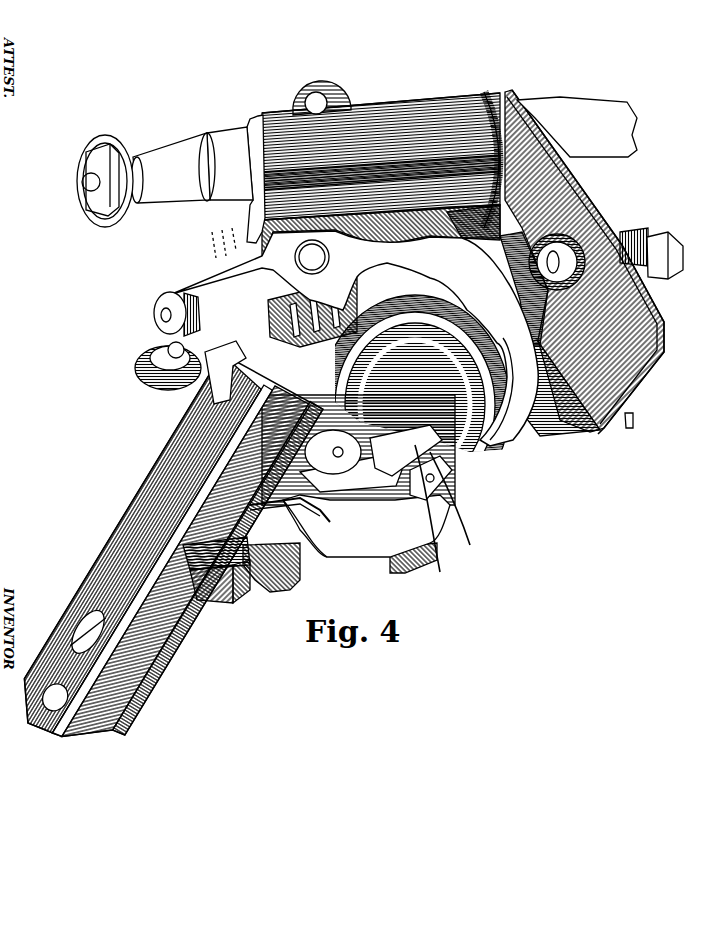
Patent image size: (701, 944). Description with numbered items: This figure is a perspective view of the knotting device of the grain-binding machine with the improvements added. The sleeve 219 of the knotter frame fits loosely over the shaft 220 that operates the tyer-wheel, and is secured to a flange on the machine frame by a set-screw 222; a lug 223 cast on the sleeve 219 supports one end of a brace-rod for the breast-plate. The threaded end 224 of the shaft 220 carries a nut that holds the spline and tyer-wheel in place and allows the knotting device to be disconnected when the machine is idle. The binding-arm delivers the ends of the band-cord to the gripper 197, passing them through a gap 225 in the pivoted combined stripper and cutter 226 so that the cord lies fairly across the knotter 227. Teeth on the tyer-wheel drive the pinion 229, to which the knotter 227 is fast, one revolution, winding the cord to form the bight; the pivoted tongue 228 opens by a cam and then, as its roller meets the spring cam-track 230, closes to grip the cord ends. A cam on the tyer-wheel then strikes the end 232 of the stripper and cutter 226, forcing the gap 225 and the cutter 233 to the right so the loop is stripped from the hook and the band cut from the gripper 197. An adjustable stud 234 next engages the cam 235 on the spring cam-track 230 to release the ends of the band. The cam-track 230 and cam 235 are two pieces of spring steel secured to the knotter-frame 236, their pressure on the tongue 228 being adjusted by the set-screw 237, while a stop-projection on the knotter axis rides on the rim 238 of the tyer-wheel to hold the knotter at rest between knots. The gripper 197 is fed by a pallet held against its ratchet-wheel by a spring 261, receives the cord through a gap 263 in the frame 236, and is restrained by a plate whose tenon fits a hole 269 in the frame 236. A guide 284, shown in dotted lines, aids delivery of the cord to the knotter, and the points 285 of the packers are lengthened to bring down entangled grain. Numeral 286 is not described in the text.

The gripper 197 is at (346, 543).
The sleeve 219 is at (381, 154).
The shaft 220 is at (577, 127).
The set-screw 222 is at (651, 242).
The lug 223 is at (322, 89).
The threaded end of shaft 224 is at (158, 179).
The gap 225 is at (323, 445).
The pivoted combined stripper and cutter 226 is at (355, 338).
The knotter 227 is at (351, 475).
The pivoted tongue 228 is at (406, 450).
The pinion 229 is at (232, 290).
The spring cam-track 230 is at (219, 419).
The end of pivoted cutter and stripper 232 is at (169, 311).
The cutter 233 is at (345, 512).
The adjustable stud 234 is at (213, 331).
The cam 235 is at (224, 372).
The knotter-frame 236 is at (164, 559).
The set-screw 237 is at (91, 630).
The rim 238 is at (582, 262).
The spring 261 is at (250, 456).
The gap 263 is at (250, 470).
The hole 269 is at (216, 570).
The guide 284 is at (488, 548).
The points of the packers 285 is at (431, 478).
The hub 286 is at (557, 320).